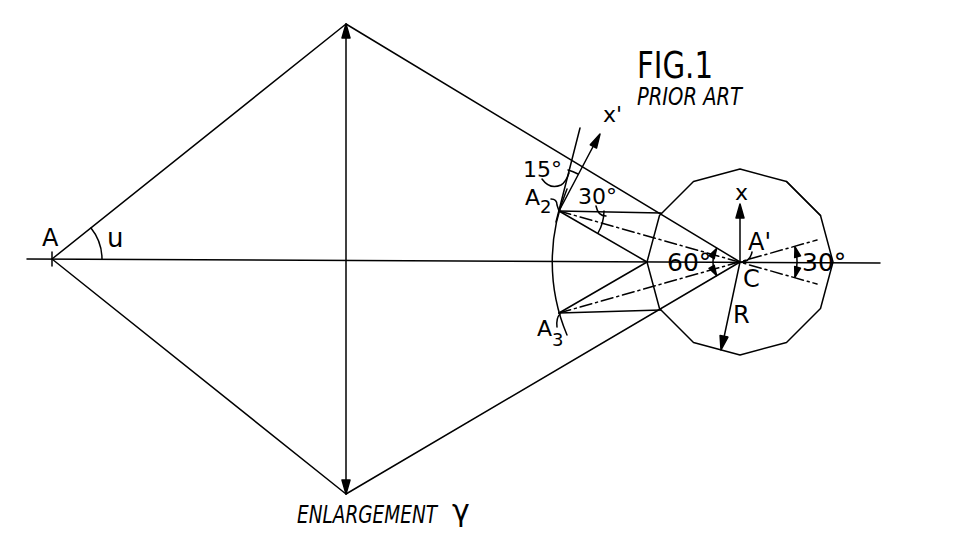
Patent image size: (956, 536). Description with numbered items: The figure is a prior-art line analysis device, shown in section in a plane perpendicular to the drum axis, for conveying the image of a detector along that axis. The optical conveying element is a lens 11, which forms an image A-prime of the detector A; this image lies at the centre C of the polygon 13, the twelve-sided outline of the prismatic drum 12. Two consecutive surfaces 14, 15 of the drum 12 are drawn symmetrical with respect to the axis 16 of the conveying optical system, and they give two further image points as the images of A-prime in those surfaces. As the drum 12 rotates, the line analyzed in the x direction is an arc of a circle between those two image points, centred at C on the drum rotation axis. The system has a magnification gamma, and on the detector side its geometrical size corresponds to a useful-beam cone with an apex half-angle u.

The lens 11 is at (347, 88).
The drum 12 is at (739, 168).
The polygon 13 is at (804, 200).
The first drum surface 14 is at (655, 213).
The second drum surface 15 is at (652, 313).
The axis of the conveying optical system 16 is at (448, 263).